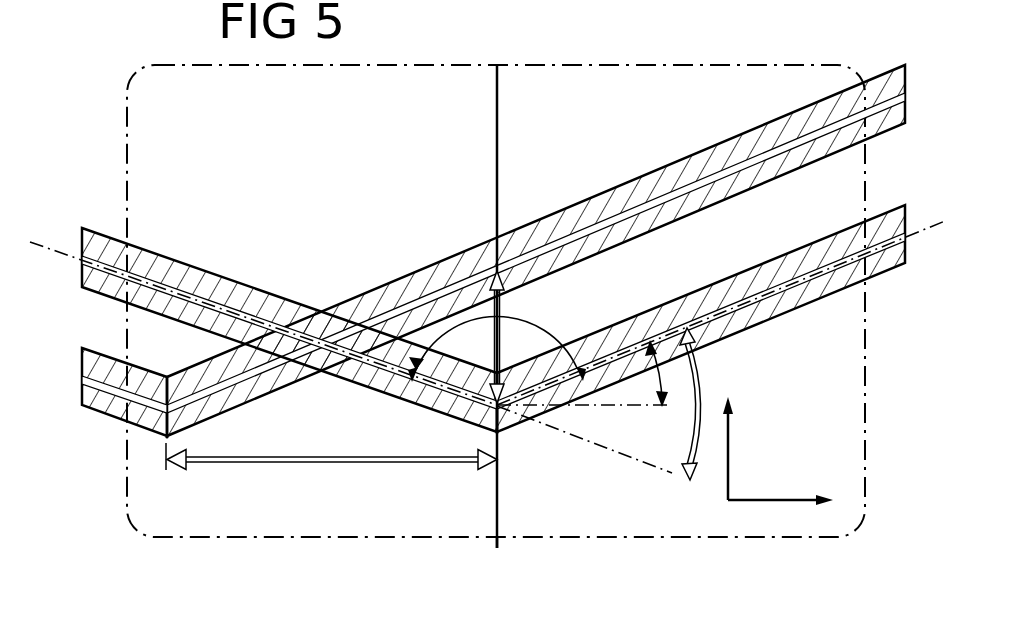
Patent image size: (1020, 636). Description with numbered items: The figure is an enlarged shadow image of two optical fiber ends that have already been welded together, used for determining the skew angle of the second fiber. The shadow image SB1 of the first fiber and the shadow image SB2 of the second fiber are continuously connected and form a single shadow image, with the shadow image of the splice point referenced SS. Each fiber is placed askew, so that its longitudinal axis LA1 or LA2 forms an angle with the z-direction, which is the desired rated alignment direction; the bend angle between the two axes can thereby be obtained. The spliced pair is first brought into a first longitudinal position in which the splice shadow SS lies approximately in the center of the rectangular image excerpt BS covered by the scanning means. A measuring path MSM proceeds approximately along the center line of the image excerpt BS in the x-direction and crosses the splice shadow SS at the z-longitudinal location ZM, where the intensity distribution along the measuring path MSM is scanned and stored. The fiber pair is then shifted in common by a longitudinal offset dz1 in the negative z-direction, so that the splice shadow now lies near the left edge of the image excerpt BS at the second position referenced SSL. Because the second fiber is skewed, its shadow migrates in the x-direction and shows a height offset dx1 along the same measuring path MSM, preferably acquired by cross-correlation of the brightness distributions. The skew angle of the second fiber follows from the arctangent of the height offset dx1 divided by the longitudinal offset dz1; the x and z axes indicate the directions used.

The longitudinal axis of optical fiber FE1 LA1 is at (42, 238).
The longitudinal axis of optical fiber FE2 LA2 is at (945, 222).
The shadow image of optical fiber FE1 SB1 is at (180, 272).
The shadow image of optical fiber FE2 SB2 is at (765, 316).
The measuring path MSM is at (496, 138).
The rectangular image excerpt BS is at (867, 383).
The shadow image of the splice point SS is at (503, 425).
The shadow region of the splice in second longitudinal position SSL is at (167, 437).
The z-longitudinal location of the first longitudinal position ZM is at (497, 548).
The longitudinal offset dz1 is at (331, 431).
The height offset dx1 is at (493, 338).
The x-direction x is at (726, 430).
The z-direction z is at (789, 501).